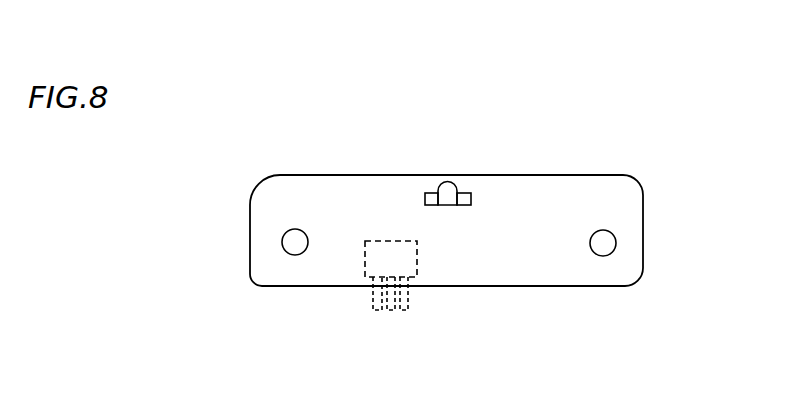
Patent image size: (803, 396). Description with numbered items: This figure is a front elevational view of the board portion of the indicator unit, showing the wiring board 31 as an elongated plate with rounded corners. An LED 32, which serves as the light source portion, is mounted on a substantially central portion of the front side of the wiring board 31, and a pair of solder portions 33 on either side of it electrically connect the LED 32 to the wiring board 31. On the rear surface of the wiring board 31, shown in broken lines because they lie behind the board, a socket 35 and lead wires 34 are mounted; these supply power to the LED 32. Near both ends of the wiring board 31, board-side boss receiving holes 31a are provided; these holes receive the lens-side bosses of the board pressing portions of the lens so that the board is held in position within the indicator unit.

The wiring board 31 is at (546, 208).
The board-side boss receiving hole 31a is at (288, 249).
The LED 32 is at (450, 188).
The solder portion 33 is at (426, 199).
The lead wire 34 is at (375, 298).
The socket 35 is at (417, 262).